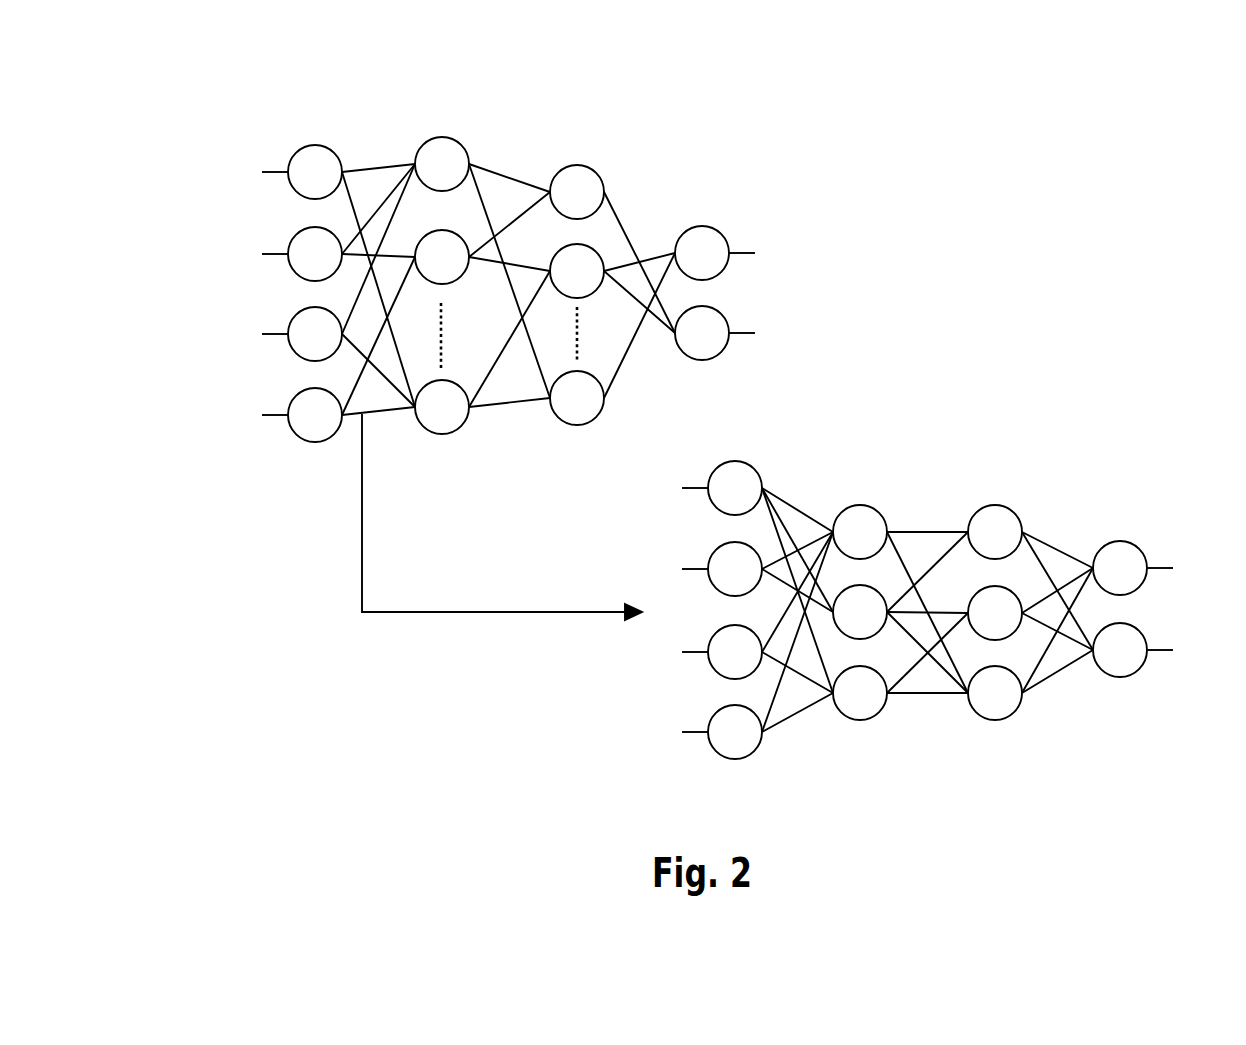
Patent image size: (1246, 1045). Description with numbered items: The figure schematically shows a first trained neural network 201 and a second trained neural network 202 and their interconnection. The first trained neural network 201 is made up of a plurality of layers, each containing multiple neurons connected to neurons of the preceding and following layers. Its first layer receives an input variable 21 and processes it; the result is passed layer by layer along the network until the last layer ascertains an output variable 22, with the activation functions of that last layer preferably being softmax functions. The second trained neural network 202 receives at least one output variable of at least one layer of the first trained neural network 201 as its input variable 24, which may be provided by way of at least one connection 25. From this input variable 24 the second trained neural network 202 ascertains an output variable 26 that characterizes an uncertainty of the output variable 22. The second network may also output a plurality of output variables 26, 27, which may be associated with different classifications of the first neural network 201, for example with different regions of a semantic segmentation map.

The first trained neural network 201 is at (495, 243).
The second trained neural network 202 is at (961, 596).
The input variable 21 is at (220, 295).
The output variable 22 is at (780, 295).
The input variable 24 is at (627, 617).
The connection 25 is at (400, 612).
The output variable 26 is at (1163, 567).
The output variable 27 is at (1160, 648).